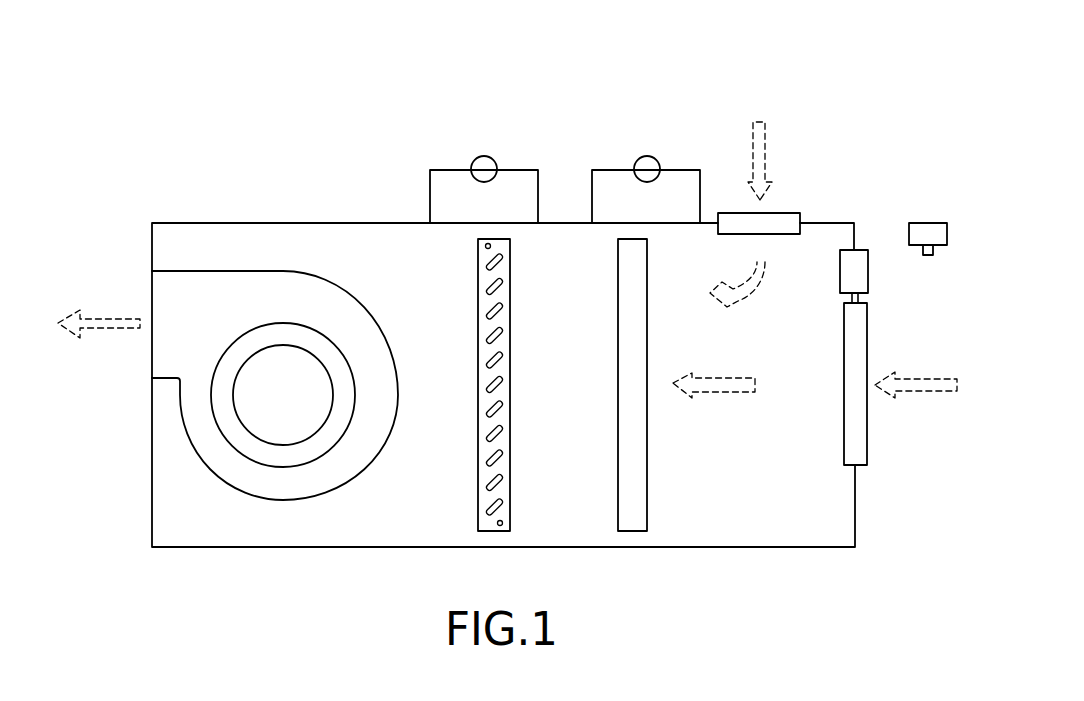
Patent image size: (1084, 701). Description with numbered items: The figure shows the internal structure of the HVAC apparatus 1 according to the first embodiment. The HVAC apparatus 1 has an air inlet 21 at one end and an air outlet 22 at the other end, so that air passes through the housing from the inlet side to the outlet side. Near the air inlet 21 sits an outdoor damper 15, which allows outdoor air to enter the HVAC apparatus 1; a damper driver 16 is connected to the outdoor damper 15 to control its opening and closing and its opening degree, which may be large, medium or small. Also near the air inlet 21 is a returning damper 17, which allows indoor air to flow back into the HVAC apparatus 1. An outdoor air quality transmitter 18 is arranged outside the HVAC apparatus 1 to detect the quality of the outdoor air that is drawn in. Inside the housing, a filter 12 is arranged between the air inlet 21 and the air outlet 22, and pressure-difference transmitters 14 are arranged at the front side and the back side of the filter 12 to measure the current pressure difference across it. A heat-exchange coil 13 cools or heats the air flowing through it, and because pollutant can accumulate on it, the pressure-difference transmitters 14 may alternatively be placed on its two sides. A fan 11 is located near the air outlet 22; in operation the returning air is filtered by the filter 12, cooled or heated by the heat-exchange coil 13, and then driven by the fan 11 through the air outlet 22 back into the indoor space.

The HVAC apparatus 1 is at (509, 23).
The fan 11 is at (257, 288).
The filter 12 is at (632, 282).
The heat-exchange coil 13 is at (488, 282).
The pressure-difference transmitters 14 is at (638, 158).
The outdoor damper 15 is at (860, 340).
The damper driver 16 is at (862, 263).
The returning damper 17 is at (773, 217).
The outdoor air quality transmitter 18 is at (928, 227).
The air inlet 21 is at (892, 473).
The air outlet 22 is at (113, 473).